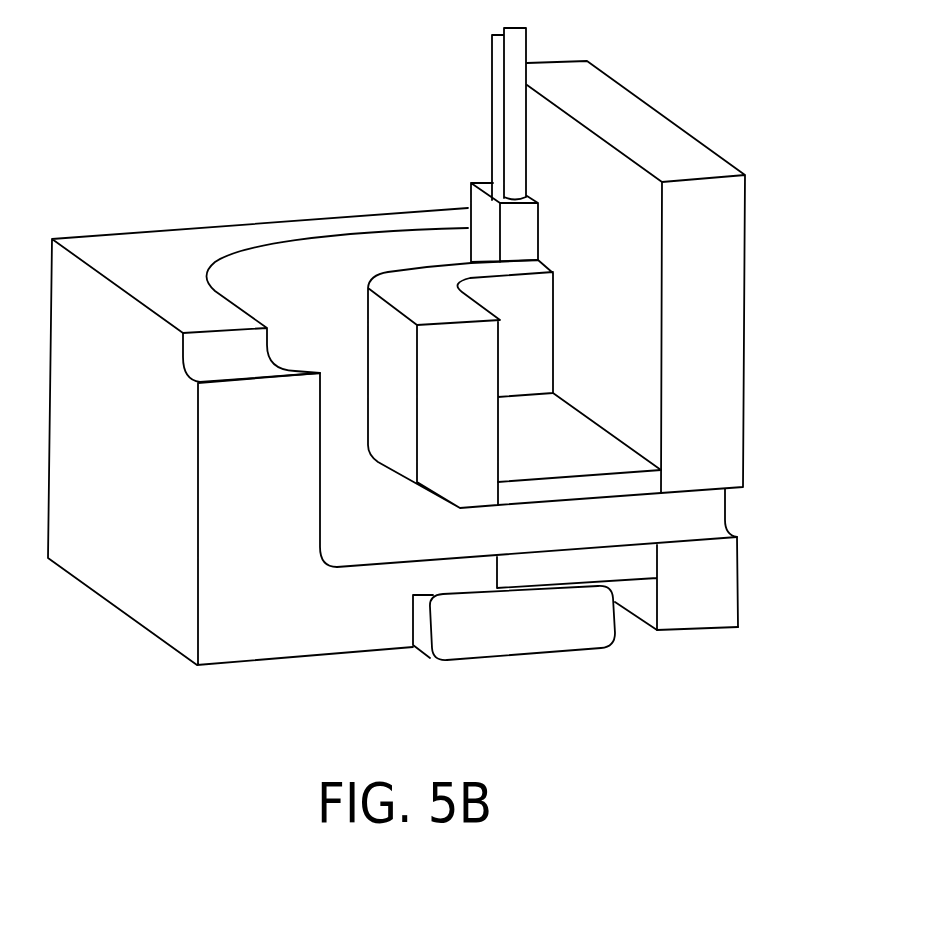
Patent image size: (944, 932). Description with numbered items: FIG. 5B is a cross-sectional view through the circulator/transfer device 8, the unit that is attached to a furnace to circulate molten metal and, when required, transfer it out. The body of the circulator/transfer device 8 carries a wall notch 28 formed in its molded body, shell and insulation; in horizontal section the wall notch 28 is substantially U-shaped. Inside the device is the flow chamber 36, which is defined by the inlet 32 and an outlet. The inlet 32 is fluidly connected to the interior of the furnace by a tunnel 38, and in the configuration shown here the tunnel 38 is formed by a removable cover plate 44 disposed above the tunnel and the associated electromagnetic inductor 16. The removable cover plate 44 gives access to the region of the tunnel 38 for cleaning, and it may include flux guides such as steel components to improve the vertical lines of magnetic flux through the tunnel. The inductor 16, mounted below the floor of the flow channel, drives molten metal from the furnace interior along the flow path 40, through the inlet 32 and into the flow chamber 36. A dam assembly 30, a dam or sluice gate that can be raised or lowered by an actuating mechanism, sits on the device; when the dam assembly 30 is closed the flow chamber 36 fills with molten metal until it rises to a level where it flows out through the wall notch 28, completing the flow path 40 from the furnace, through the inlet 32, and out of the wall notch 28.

The circulator/transfer device 8 is at (168, 214).
The wall notch 28 is at (228, 348).
The flow chamber 36 is at (298, 298).
The dam assembly 30 is at (480, 90).
The flow path 40 is at (706, 138).
The removable cover plate 44 is at (578, 460).
The tunnel 38 is at (748, 514).
The inlet 32 is at (415, 538).
The electromagnetic inductor 16 is at (506, 668).